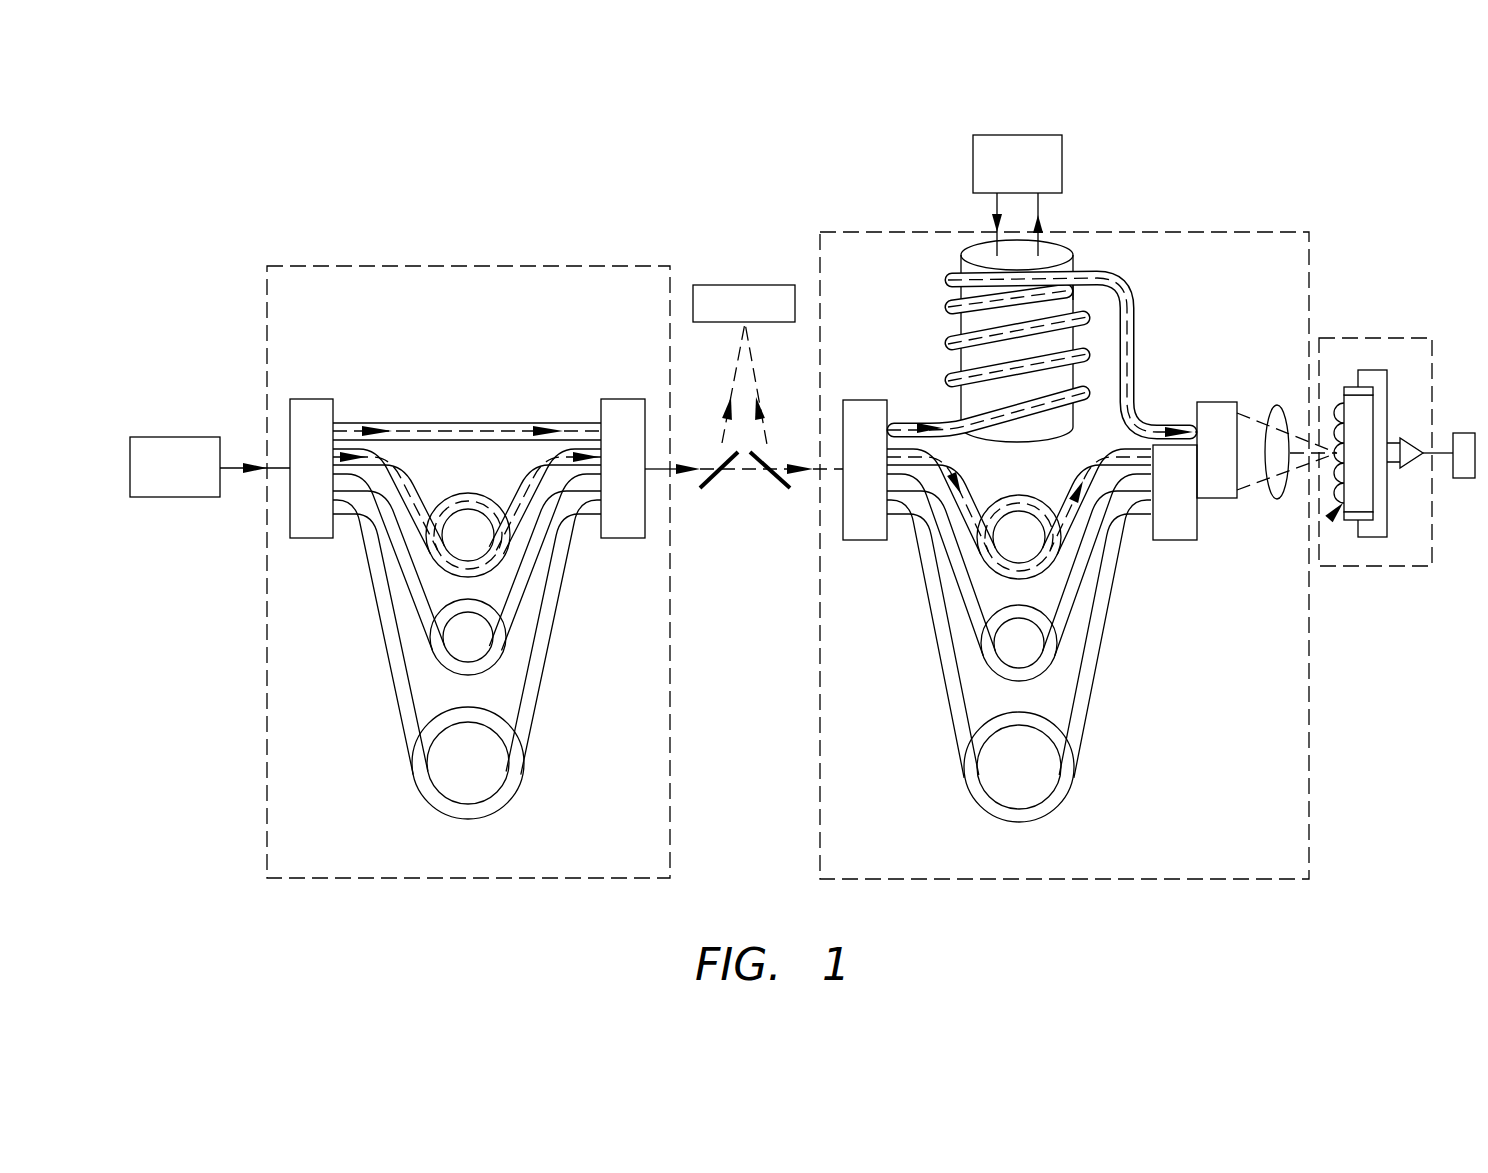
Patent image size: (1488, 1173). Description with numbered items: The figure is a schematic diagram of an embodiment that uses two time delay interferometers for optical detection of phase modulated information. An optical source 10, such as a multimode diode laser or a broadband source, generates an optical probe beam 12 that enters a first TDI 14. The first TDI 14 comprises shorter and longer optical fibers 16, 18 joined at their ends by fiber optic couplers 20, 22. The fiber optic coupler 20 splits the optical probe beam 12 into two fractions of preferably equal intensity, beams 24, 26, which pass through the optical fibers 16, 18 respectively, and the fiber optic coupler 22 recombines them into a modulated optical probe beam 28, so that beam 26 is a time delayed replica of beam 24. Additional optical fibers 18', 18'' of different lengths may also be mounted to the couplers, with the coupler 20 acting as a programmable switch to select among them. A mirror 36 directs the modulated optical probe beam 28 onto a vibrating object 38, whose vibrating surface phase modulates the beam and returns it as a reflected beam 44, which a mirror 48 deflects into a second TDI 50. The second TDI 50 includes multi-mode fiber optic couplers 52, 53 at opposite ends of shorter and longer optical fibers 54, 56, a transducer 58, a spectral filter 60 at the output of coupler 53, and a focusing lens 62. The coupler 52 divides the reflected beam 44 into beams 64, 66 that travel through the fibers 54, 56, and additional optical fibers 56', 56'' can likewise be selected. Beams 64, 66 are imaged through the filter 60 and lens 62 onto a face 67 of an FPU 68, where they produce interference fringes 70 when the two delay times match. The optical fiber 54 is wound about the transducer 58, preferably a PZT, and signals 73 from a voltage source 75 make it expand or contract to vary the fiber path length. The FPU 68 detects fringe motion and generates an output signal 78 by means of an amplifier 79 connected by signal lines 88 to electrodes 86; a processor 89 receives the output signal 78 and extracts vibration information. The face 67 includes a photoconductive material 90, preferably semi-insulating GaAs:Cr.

The optical source 10 is at (198, 437).
The optical probe beam 12 is at (236, 470).
The first TDI 14 is at (267, 850).
The shorter optical fiber 16 is at (380, 423).
The longer optical fiber 18 is at (467, 510).
The additional optical fiber 18' is at (467, 596).
The additional optical fiber 18'' is at (467, 668).
The fiber optic coupler 20 is at (307, 538).
The fiber optic coupler 22 is at (610, 538).
The beam 24 is at (447, 432).
The beam 26 is at (521, 507).
The modulated optical probe beam 28 is at (712, 467).
The mirror 36 is at (728, 468).
The vibrating object 38 is at (743, 285).
The reflected beam 44 is at (757, 388).
The mirror 48 is at (775, 470).
The second TDI 50 is at (820, 830).
The fiber optic coupler 52 is at (867, 541).
The fiber optic coupler 53 is at (1165, 530).
The shorter optical fiber 54 is at (947, 418).
The longer optical fiber 56 is at (1019, 511).
The additional optical fiber 56' is at (1018, 595).
The additional optical fiber 56'' is at (1019, 661).
The transducer 58 is at (1078, 256).
The spectral filter 60 is at (1213, 500).
The focusing lens 62 is at (1280, 407).
The beam 64 is at (902, 422).
The beam 66 is at (965, 500).
The face 67 is at (1329, 519).
The FPU 68 is at (1373, 538).
The interference fringes 70 is at (1336, 408).
The signals 73 is at (993, 220).
The voltage source 75 is at (972, 152).
The output signal 78 is at (1440, 445).
The amplifier 79 is at (1418, 462).
The electrodes 86 is at (1352, 388).
The signal lines 88 is at (1373, 370).
The processor 89 is at (1457, 478).
The photoconductive material 90 is at (1355, 422).